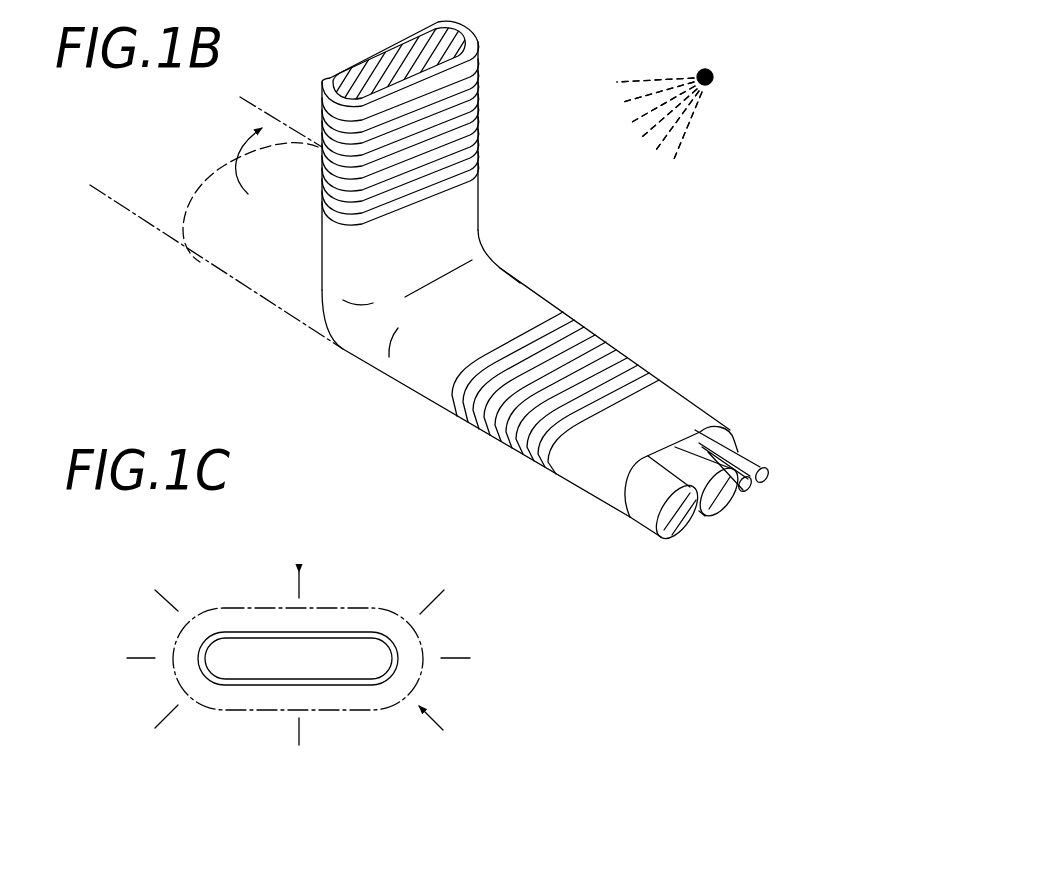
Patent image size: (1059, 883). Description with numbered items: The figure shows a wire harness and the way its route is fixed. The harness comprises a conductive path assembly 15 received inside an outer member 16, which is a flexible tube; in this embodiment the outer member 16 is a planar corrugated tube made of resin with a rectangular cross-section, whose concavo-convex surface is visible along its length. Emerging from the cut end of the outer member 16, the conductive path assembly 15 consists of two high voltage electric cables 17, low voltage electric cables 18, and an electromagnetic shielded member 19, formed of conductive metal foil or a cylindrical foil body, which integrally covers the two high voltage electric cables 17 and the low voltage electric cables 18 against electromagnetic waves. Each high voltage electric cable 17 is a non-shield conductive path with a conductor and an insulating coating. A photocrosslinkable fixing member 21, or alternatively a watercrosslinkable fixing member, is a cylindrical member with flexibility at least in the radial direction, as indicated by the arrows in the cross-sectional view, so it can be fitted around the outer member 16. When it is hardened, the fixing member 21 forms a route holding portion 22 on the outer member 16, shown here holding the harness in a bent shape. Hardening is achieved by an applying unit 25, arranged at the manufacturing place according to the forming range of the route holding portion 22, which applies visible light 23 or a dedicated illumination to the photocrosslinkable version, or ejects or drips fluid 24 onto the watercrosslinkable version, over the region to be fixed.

In FIG. 1B, the conductive path assembly 15 is at (710, 403).
In FIG. 1B, the outer member 16 is at (486, 448).
In FIG. 1B, the high voltage electric cable 17 is at (700, 462).
In FIG. 1B, the low voltage electric cable 18 is at (749, 463).
In FIG. 1B, the electromagnetic shielded member 19 is at (675, 422).
In FIG. 1B, the photocrosslinkable fixing member 21 is at (258, 267).
In FIG. 1C, the photocrosslinkable fixing member 21 is at (273, 633).
In FIG. 1B, the route holding portion 22 is at (493, 283).
In FIG. 1B, the visible light 23 is at (642, 80).
In FIG. 1B, the fluid 24 is at (659, 118).
In FIG. 1B, the applying unit 25 is at (714, 76).